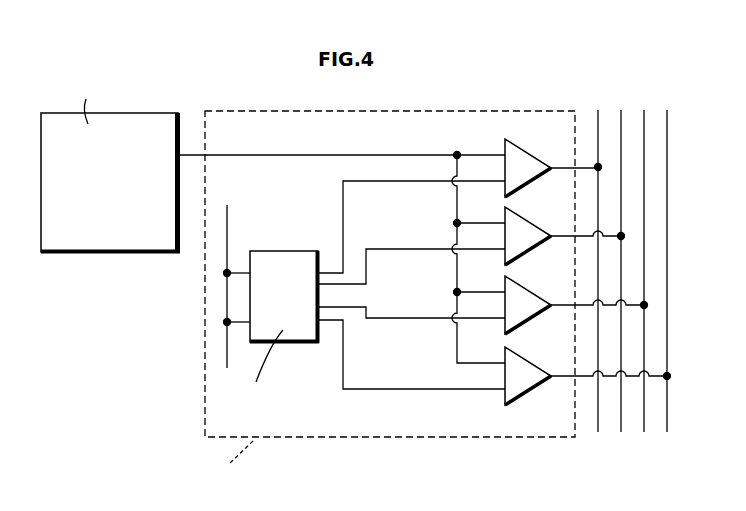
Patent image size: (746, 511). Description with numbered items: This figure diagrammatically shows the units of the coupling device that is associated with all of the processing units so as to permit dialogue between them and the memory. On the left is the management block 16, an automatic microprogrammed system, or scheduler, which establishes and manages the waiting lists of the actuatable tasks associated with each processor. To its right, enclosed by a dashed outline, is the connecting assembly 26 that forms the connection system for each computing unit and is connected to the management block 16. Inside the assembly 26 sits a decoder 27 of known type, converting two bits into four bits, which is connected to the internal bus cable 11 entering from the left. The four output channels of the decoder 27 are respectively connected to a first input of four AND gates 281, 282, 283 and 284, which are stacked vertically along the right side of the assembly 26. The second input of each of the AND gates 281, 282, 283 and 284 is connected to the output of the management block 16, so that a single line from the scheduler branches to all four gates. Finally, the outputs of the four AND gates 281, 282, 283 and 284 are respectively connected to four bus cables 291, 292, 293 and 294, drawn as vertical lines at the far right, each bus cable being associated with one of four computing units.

The management block 16 is at (82, 254).
The assembly 26 is at (203, 345).
The internal bus cable 11 is at (235, 276).
The decoder 27 is at (286, 250).
The AND gate 281 is at (530, 151).
The AND gate 282 is at (537, 219).
The AND gate 283 is at (539, 289).
The AND gate 284 is at (540, 359).
The bus cable 291 is at (598, 118).
The bus cable 292 is at (621, 118).
The bus cable 293 is at (644, 118).
The bus cable 294 is at (667, 118).